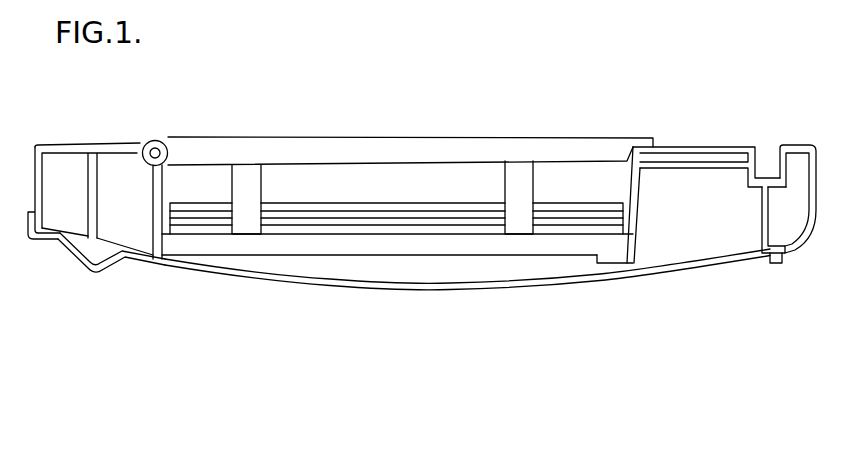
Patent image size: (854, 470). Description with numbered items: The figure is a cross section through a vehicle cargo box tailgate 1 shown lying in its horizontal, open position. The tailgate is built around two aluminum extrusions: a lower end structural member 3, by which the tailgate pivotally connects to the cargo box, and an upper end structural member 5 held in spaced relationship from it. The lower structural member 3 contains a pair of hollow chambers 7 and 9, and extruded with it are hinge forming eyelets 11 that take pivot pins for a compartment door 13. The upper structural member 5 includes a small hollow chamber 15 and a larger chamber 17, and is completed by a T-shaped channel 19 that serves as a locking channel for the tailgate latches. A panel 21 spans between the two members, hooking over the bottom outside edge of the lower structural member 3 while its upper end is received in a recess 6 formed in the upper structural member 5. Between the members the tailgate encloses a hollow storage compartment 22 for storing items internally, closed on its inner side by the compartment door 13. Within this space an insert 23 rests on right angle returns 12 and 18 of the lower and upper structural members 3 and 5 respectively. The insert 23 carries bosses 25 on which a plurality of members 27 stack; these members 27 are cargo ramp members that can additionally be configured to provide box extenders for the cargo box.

The tailgate 1 is at (222, 363).
The lower end structural member 3 is at (135, 120).
The upper end structural member 5 is at (672, 138).
The recess 6 is at (778, 263).
The hollow chamber 7 is at (62, 157).
The hollow chamber 9 is at (113, 157).
The hinge forming eyelets 11 is at (152, 143).
The right angle return 12 is at (168, 265).
The compartment door 13 is at (460, 138).
The small hollow chamber 15 is at (700, 155).
The larger chamber 17 is at (728, 187).
The right angle return 18 is at (603, 265).
The T-shaped channel 19 is at (773, 150).
The panel 21 is at (677, 270).
The hollow storage compartment 22 is at (485, 190).
The insert 23 is at (470, 253).
The bosses 25 is at (247, 182).
The members 27 is at (372, 190).